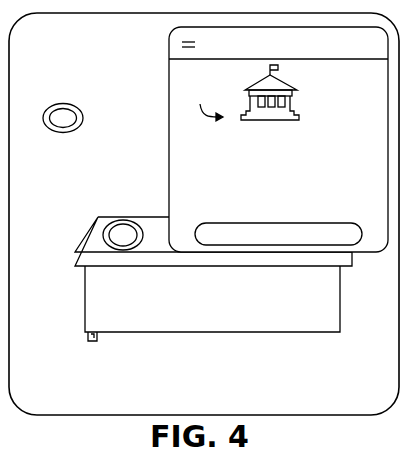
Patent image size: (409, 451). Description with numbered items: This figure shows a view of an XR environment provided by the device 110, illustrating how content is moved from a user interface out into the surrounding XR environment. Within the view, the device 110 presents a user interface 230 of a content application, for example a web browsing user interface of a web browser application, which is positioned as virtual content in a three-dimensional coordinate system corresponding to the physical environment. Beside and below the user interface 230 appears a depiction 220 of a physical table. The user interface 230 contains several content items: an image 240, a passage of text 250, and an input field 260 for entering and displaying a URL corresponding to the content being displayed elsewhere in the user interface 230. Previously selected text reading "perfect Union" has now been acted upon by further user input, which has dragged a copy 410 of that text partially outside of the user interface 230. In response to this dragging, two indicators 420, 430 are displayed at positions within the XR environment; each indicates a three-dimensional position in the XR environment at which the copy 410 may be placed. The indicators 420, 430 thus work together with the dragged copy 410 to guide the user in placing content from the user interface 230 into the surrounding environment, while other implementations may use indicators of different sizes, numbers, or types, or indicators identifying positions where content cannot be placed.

The device 110 is at (71, 50).
The depiction of table 220 is at (107, 331).
The user interface 230 is at (170, 38).
The image 240 is at (301, 117).
The text 250 is at (206, 100).
The input field 260 is at (355, 247).
The copy of the text 410 is at (140, 161).
The indicator 420 is at (103, 233).
The indicator 430 is at (52, 133).